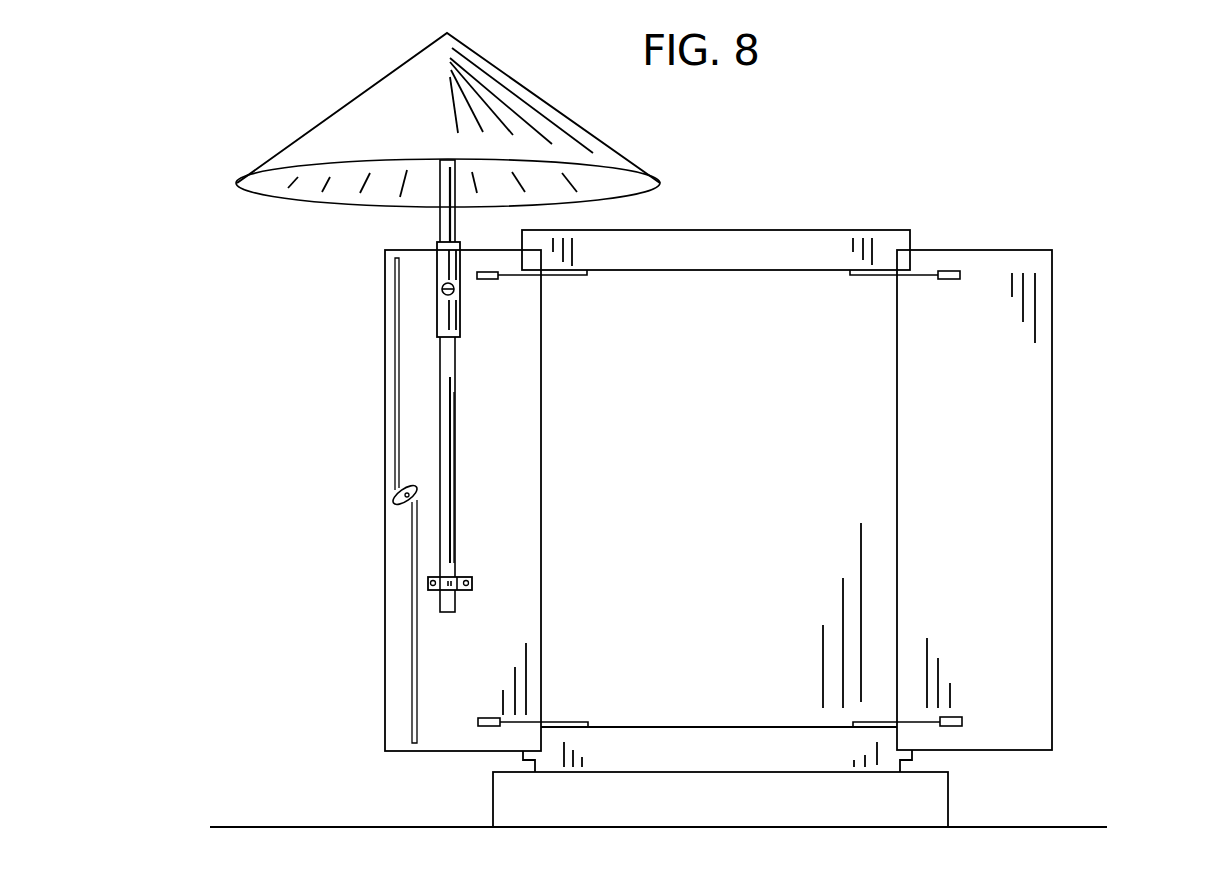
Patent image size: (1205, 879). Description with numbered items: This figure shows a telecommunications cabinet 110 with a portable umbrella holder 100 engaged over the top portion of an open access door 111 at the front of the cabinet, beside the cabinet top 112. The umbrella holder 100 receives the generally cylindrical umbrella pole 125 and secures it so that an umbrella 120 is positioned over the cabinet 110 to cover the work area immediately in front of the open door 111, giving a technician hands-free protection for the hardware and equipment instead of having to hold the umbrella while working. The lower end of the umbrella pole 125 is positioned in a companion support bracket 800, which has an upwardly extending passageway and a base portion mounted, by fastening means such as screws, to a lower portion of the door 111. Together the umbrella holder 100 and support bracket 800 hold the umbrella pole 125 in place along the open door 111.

The umbrella holder 100 is at (458, 297).
The telecommunications cabinet 110 is at (1085, 392).
The access door 111 is at (385, 303).
The top 112 is at (747, 230).
The umbrella 120 is at (308, 111).
The umbrella pole 125 is at (457, 475).
The support bracket 800 is at (428, 582).